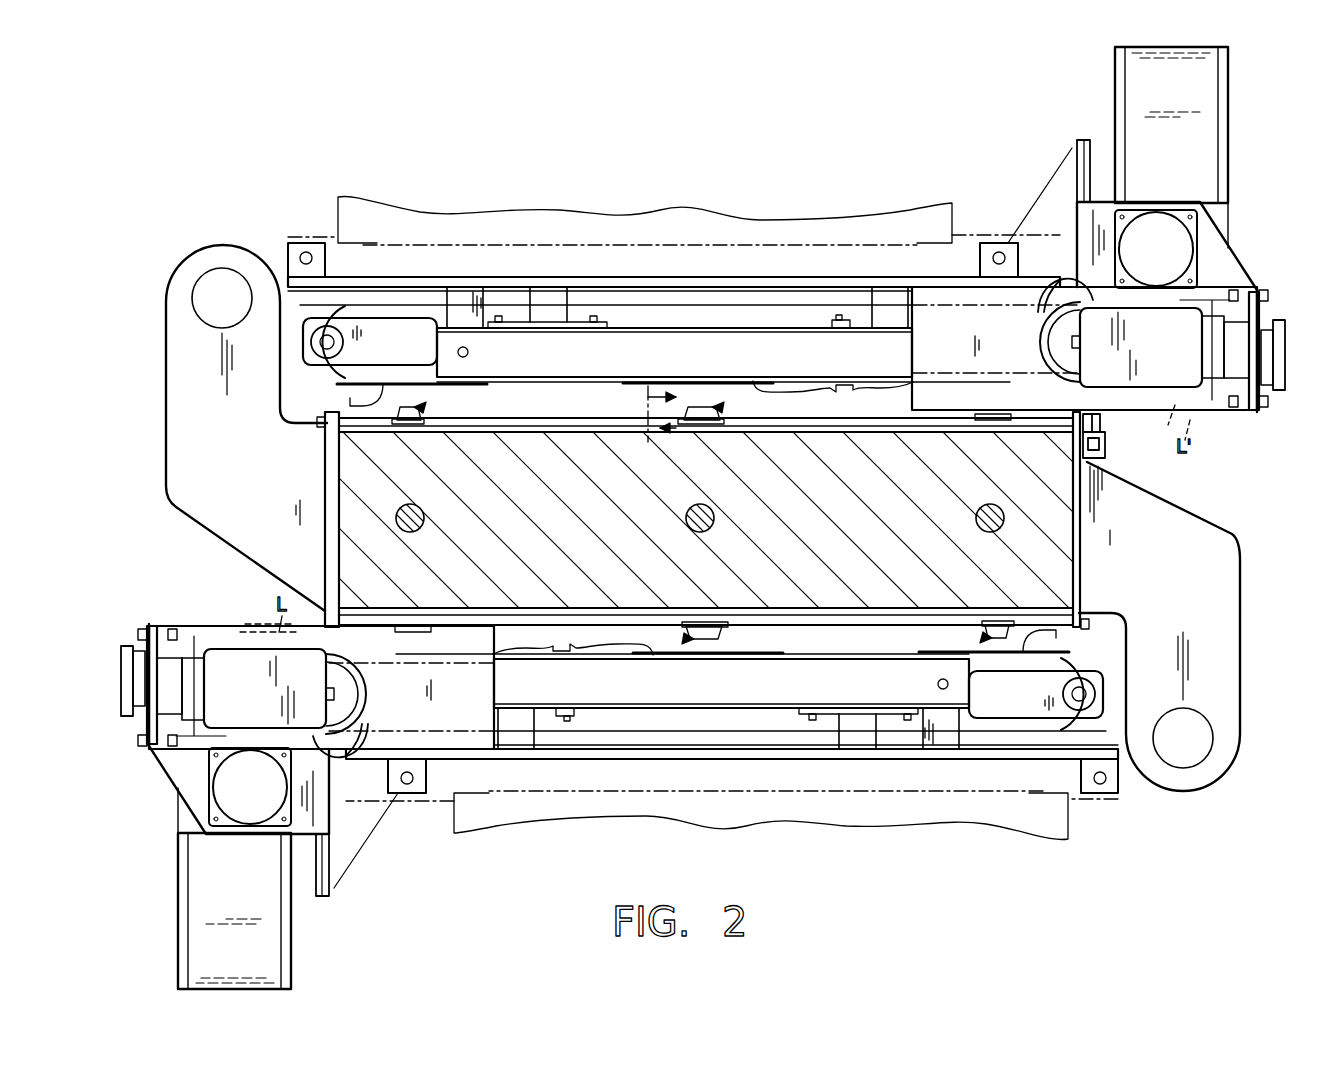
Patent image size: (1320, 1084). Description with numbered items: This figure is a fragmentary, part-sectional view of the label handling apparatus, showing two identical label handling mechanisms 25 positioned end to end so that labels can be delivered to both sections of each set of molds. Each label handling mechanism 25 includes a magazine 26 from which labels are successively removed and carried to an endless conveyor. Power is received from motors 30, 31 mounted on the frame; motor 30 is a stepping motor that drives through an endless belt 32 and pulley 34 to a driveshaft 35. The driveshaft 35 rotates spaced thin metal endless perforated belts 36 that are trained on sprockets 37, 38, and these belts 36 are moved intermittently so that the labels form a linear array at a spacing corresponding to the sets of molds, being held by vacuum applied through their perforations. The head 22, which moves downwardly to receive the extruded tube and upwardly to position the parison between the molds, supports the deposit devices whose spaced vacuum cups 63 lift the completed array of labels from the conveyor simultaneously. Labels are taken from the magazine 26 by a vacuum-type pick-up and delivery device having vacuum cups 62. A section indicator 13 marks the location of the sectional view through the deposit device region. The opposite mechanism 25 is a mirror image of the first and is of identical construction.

The section line 13- 13 is at (644, 419).
The head 22 is at (1070, 560).
The label handling mechanism 25 is at (1076, 143).
The magazine 26 is at (1232, 150).
The motor 30 is at (1175, 240).
The motor 31 is at (1172, 322).
The endless belt 32 is at (1082, 283).
The pulley 34 is at (1045, 336).
The driveshaft 35 is at (1043, 351).
The endless perforated belts 36 is at (568, 380).
The sprocket 37 is at (362, 692).
The sprocket 38 is at (1124, 618).
The vacuum cups 62 is at (1110, 432).
The vacuum cups 63 is at (430, 406).